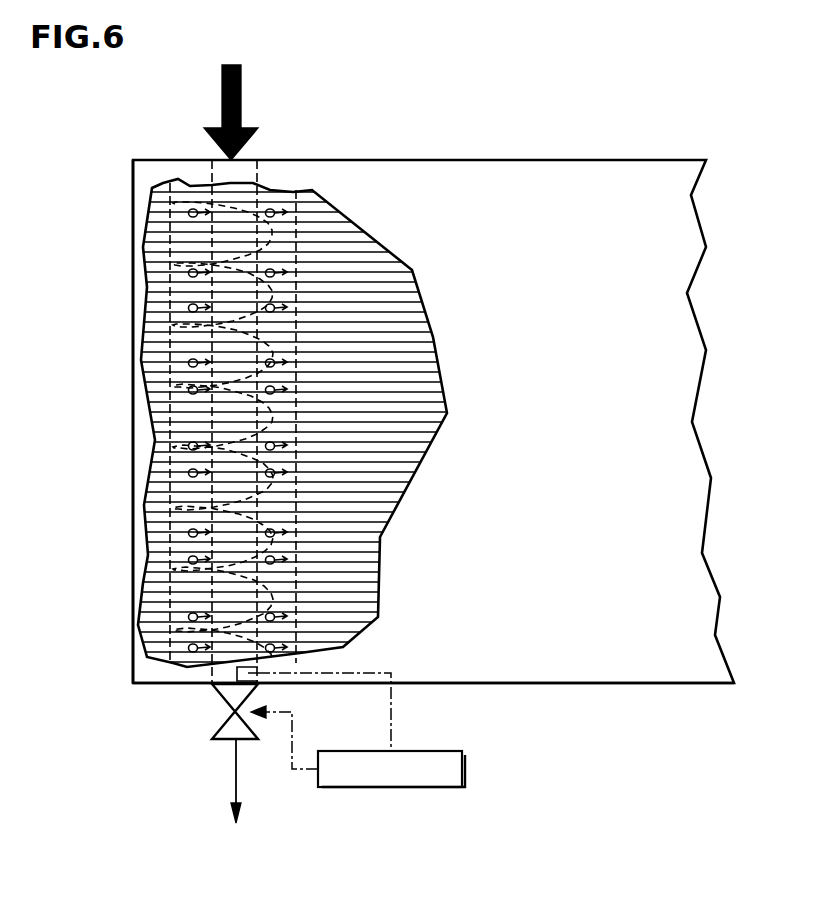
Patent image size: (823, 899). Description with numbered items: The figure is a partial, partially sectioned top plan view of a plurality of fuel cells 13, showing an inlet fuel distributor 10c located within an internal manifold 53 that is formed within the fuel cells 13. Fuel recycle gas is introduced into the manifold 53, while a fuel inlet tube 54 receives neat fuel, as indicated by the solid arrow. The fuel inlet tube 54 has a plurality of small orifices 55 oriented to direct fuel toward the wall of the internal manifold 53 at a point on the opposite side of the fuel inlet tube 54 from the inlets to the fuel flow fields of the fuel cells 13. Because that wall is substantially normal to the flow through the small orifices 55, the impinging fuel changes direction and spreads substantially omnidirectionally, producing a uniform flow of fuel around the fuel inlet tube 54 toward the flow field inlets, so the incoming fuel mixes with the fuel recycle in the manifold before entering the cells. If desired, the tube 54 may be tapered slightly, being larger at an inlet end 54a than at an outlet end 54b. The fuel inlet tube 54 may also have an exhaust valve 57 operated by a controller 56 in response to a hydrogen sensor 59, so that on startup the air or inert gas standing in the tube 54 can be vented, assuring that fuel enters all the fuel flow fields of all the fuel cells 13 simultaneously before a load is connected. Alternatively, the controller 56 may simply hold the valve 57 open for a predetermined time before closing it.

The inlet fuel distributor 10c is at (193, 150).
The fuel inlet tube 54 is at (257, 176).
The inlet end 54a is at (157, 160).
The outlet end 54b is at (160, 685).
The fuel cells 13 is at (418, 383).
The internal manifold 53 is at (170, 435).
The small orifices 55 is at (172, 263).
The exhaust valve 57 is at (233, 711).
The hydrogen sensor 59 is at (265, 678).
The controller 56 is at (435, 751).